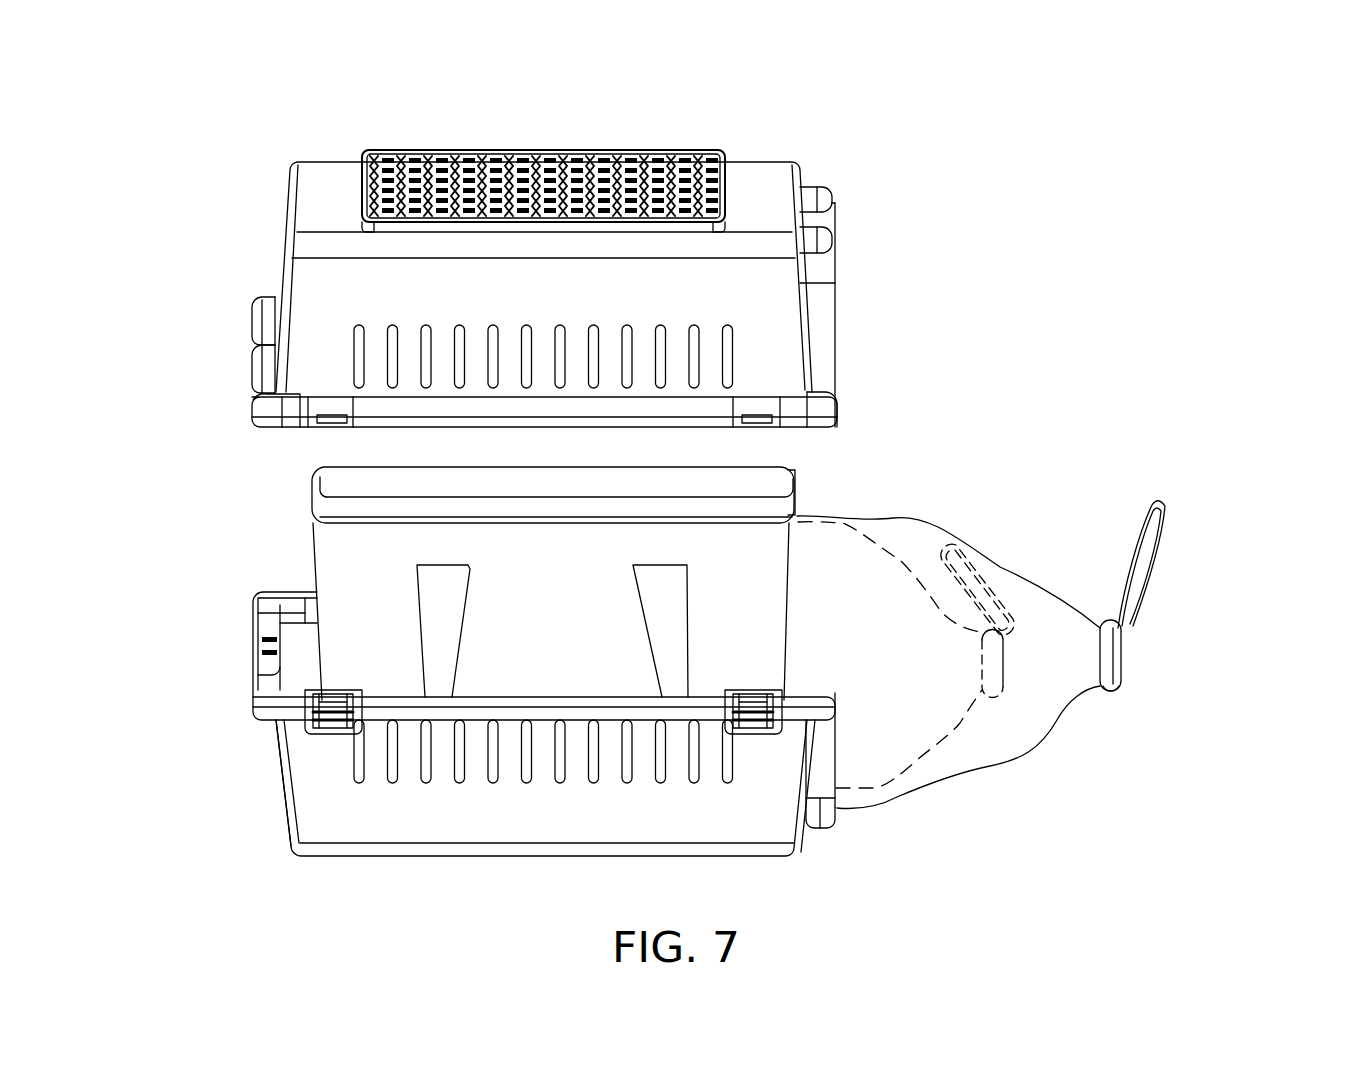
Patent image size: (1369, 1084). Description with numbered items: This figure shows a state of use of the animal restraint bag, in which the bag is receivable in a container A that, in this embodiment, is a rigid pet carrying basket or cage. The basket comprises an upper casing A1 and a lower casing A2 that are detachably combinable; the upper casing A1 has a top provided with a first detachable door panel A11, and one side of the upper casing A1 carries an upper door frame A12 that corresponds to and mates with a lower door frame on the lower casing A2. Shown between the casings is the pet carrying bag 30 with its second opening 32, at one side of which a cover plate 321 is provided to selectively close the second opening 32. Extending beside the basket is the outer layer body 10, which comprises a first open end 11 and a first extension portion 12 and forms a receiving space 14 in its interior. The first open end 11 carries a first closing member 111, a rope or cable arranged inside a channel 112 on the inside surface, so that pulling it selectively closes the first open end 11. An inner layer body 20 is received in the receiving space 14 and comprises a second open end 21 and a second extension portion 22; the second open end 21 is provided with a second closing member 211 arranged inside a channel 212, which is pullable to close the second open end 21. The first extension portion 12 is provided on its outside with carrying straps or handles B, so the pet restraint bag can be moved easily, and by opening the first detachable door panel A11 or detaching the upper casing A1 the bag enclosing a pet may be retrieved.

The container A is at (214, 110).
The upper casing A1 is at (283, 256).
The first detachable door panel A11 is at (670, 172).
The upper door frame A12 is at (838, 307).
The lower casing A2 is at (303, 780).
The carrying straps or handles B is at (440, 624).
The pet carrying bag 30 is at (335, 546).
The second opening 32 is at (332, 500).
The cover plate 321 is at (340, 508).
The outer layer body 10 is at (1136, 770).
The first open end 11 is at (1120, 654).
The first closing member 111 is at (1163, 533).
The channel 112 is at (1111, 678).
The first extension portion 12 is at (943, 782).
The receiving space 14 is at (1038, 598).
The inner layer body 20 is at (914, 508).
The second open end 21 is at (1003, 667).
The second closing member 211 is at (952, 550).
The channel 212 is at (992, 690).
The second extension portion 22 is at (872, 790).